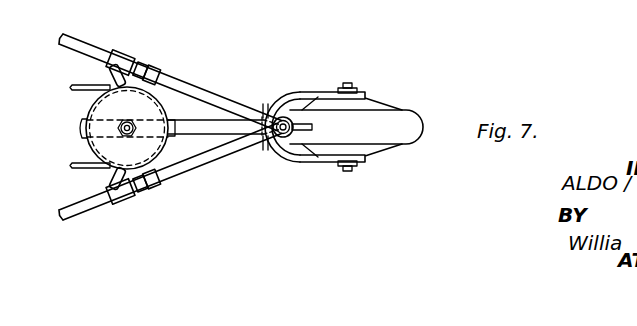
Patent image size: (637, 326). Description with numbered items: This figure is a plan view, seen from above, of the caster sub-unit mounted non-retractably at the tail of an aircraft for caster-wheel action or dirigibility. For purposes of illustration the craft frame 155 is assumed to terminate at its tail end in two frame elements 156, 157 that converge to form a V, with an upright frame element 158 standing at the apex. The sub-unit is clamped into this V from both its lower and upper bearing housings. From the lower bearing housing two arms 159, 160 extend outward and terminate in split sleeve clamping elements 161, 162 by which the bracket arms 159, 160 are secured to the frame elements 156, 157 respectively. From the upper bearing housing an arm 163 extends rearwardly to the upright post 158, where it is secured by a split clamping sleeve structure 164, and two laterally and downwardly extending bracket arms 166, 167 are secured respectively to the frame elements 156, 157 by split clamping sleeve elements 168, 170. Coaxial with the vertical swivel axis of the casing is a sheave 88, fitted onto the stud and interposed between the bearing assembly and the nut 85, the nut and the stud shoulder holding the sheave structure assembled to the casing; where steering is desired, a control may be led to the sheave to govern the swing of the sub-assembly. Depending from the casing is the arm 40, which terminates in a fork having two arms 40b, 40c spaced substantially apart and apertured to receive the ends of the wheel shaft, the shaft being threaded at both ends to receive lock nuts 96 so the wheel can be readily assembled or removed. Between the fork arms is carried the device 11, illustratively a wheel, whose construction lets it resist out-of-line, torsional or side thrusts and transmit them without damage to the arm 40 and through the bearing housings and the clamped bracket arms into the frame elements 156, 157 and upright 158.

The device 11 is at (410, 100).
The arm 40 is at (80, 127).
The fork arm 40b is at (281, 116).
The fork arm 40c is at (281, 153).
The nut 85 is at (123, 130).
The sheave 88 is at (80, 91).
The lock nut 96 is at (350, 171).
The craft frame 155 is at (204, 76).
The frame element 156 is at (220, 127).
The frame element 157 is at (66, 221).
The upright frame element 158 is at (297, 145).
The arm 159 is at (158, 55).
The arm 160 is at (133, 170).
The split sleeve clamping element 161 is at (153, 72).
The split sleeve clamping element 162 is at (157, 184).
The arm 163 is at (257, 123).
The split clamping sleeve structure 164 is at (297, 117).
The bracket arm 166 is at (110, 75).
The bracket arm 167 is at (110, 180).
The split clamping sleeve element 168 is at (122, 60).
The split clamping sleeve element 170 is at (127, 200).